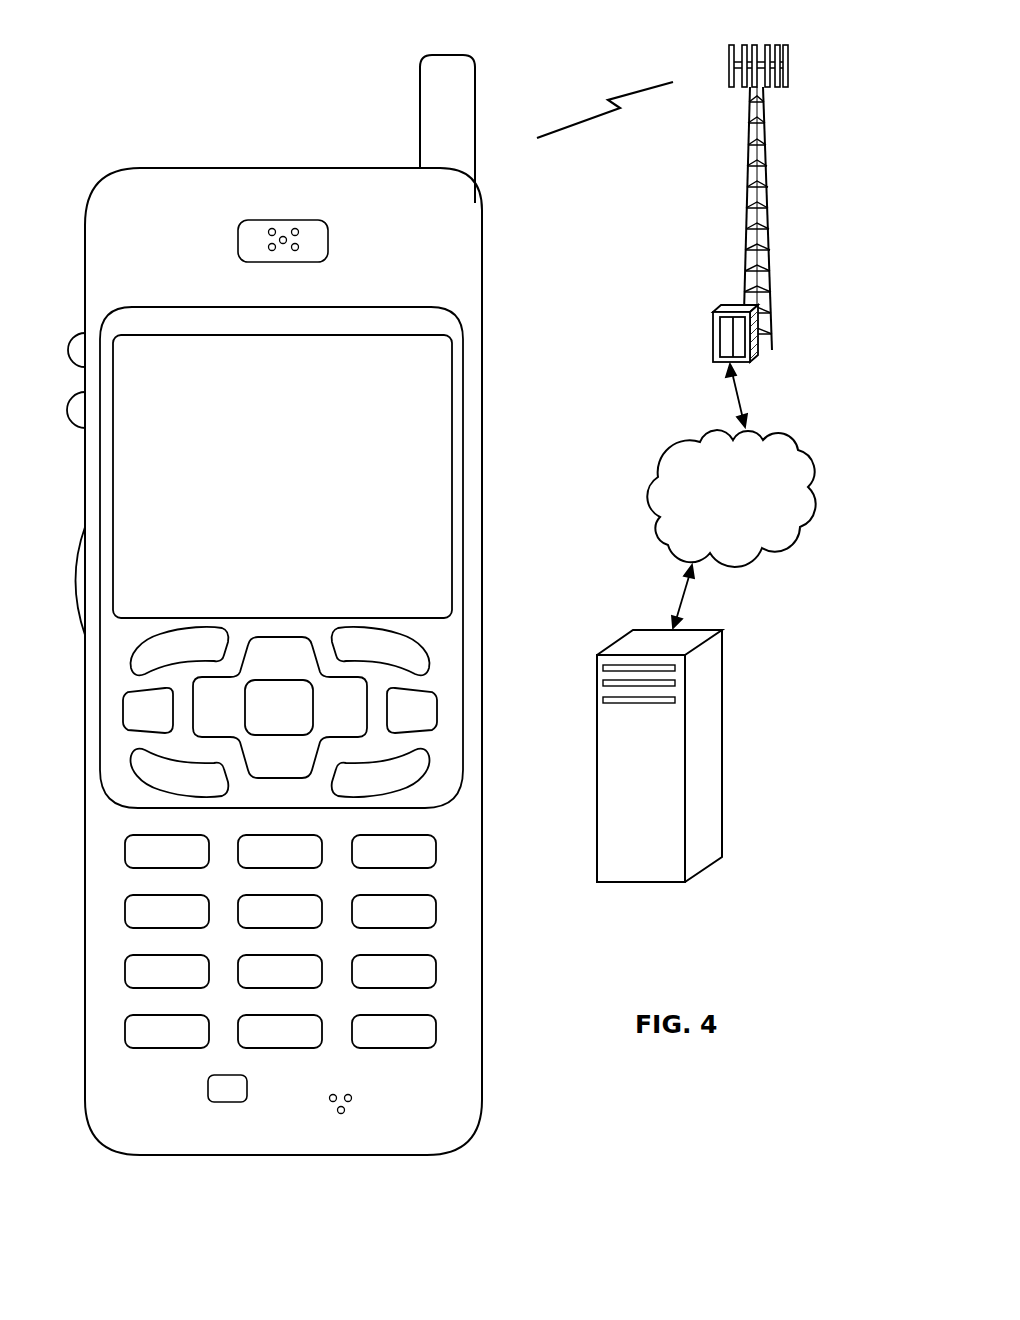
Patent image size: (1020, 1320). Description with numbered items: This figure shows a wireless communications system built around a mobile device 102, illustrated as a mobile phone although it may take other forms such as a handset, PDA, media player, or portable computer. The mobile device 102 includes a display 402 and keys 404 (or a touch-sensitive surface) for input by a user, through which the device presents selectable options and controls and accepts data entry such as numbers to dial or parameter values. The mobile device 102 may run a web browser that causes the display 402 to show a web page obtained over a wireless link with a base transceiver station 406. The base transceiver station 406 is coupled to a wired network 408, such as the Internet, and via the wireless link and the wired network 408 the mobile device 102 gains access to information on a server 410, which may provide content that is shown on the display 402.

The mobile device 102 is at (308, 618).
The display 402 is at (455, 348).
The keys 404 is at (490, 1060).
The base transceiver station 406 is at (742, 215).
The wired network 408 is at (658, 544).
The server 410 is at (642, 882).